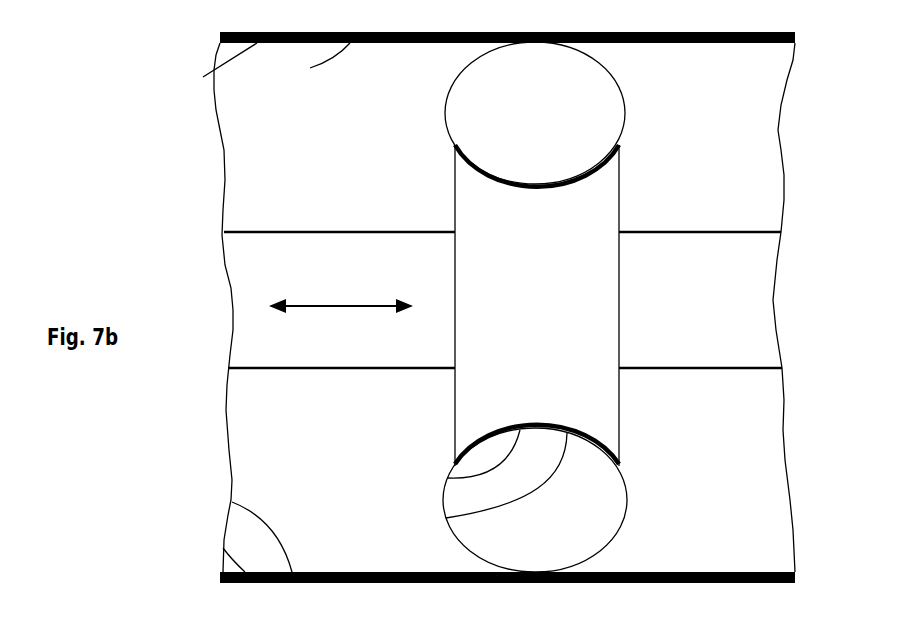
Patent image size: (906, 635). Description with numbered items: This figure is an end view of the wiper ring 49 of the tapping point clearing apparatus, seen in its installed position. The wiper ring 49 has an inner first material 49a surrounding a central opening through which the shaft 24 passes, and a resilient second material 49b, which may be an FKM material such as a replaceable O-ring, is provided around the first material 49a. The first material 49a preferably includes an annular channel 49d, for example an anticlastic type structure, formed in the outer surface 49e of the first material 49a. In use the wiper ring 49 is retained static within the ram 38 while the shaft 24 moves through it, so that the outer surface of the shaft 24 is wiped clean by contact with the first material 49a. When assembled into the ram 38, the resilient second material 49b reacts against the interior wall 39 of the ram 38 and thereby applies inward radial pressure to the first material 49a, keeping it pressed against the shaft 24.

The shaft 24 is at (260, 253).
The ram 38 is at (203, 77).
The interior wall 39 is at (232, 502).
The wiper ring 49 is at (397, 307).
The inner first material 49a is at (515, 216).
The resilient second material 49b is at (502, 110).
The annular channel 49d is at (452, 478).
The outer surface 49e is at (450, 518).